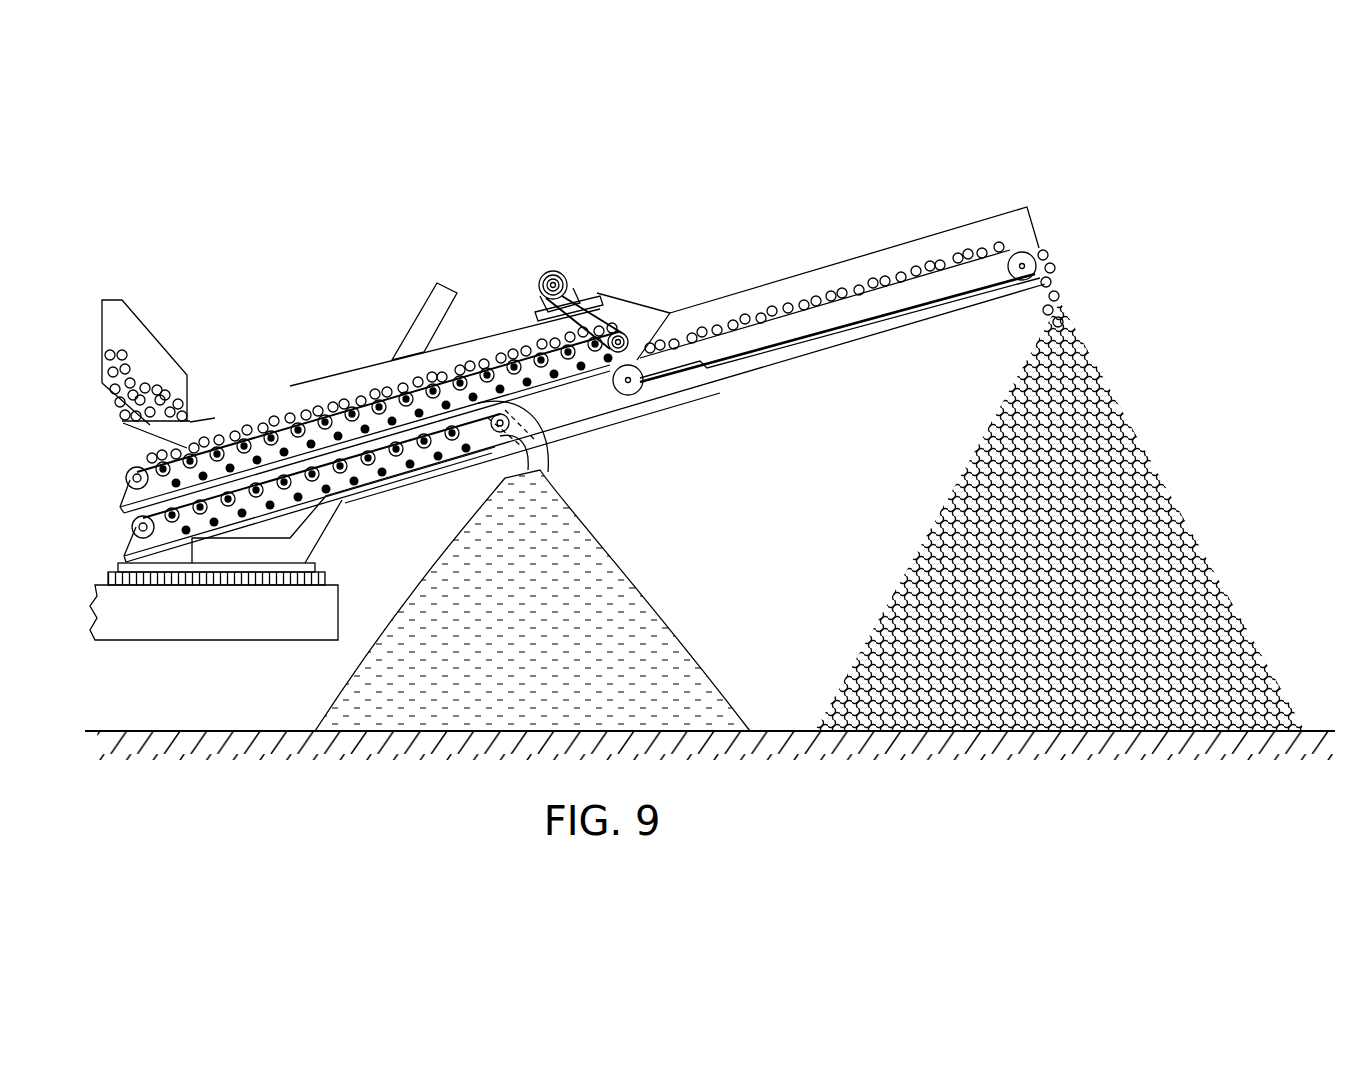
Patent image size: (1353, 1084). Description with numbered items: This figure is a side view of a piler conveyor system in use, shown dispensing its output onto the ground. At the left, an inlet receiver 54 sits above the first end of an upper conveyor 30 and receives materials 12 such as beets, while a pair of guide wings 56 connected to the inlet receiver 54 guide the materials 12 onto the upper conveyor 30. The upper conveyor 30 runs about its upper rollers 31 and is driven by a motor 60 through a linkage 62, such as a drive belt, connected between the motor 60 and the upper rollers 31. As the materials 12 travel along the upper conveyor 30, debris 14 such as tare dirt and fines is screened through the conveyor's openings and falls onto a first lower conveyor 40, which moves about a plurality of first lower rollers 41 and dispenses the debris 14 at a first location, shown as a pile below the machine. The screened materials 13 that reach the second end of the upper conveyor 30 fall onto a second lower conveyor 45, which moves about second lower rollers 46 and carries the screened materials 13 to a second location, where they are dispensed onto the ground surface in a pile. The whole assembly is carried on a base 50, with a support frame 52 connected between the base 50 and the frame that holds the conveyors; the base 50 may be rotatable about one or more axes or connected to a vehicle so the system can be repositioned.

The materials 12 is at (122, 385).
The screened materials 13 is at (751, 328).
The debris 14 is at (612, 542).
The upper conveyor 30 is at (291, 392).
The upper rollers 31 is at (122, 480).
The first lower conveyor 40 is at (150, 510).
The first lower rollers 41 is at (128, 528).
The second lower conveyor 45 is at (700, 333).
The second lower rollers 46 is at (1047, 251).
The base 50 is at (177, 645).
The support frame 52 is at (322, 512).
The inlet receiver 54 is at (116, 310).
The guide wings 56 is at (193, 417).
The motor 60 is at (568, 268).
The linkage 62 is at (600, 297).